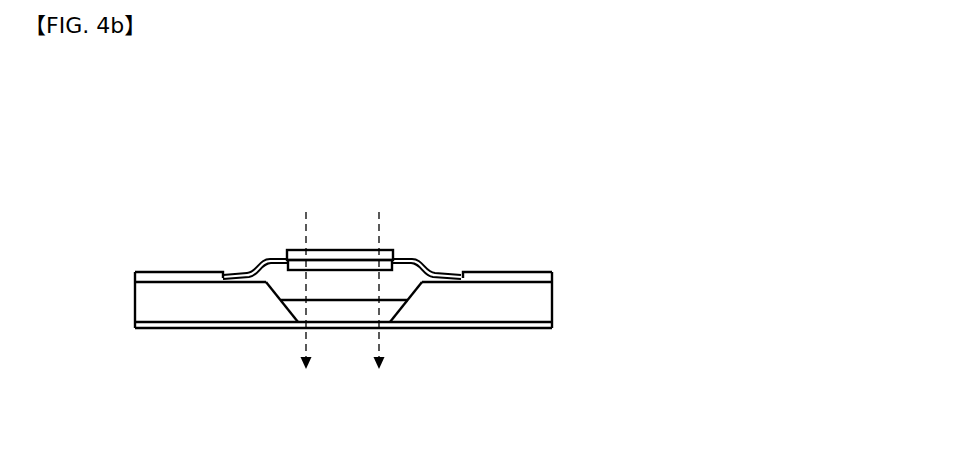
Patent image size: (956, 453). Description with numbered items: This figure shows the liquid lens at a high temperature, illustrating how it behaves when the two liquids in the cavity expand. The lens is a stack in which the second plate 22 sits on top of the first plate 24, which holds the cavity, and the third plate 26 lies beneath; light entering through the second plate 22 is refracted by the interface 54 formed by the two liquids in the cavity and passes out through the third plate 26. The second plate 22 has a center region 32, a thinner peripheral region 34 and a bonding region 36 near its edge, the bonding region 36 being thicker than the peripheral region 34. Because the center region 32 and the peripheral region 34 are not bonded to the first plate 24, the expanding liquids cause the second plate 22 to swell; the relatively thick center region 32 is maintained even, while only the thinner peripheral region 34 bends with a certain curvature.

The second plate 22 is at (604, 260).
The first plate 24 is at (566, 302).
The third plate 26 is at (566, 327).
The center region 32 is at (342, 239).
The peripheral region 34 is at (418, 246).
The bonding region 36 is at (508, 260).
The interface 54 is at (392, 314).